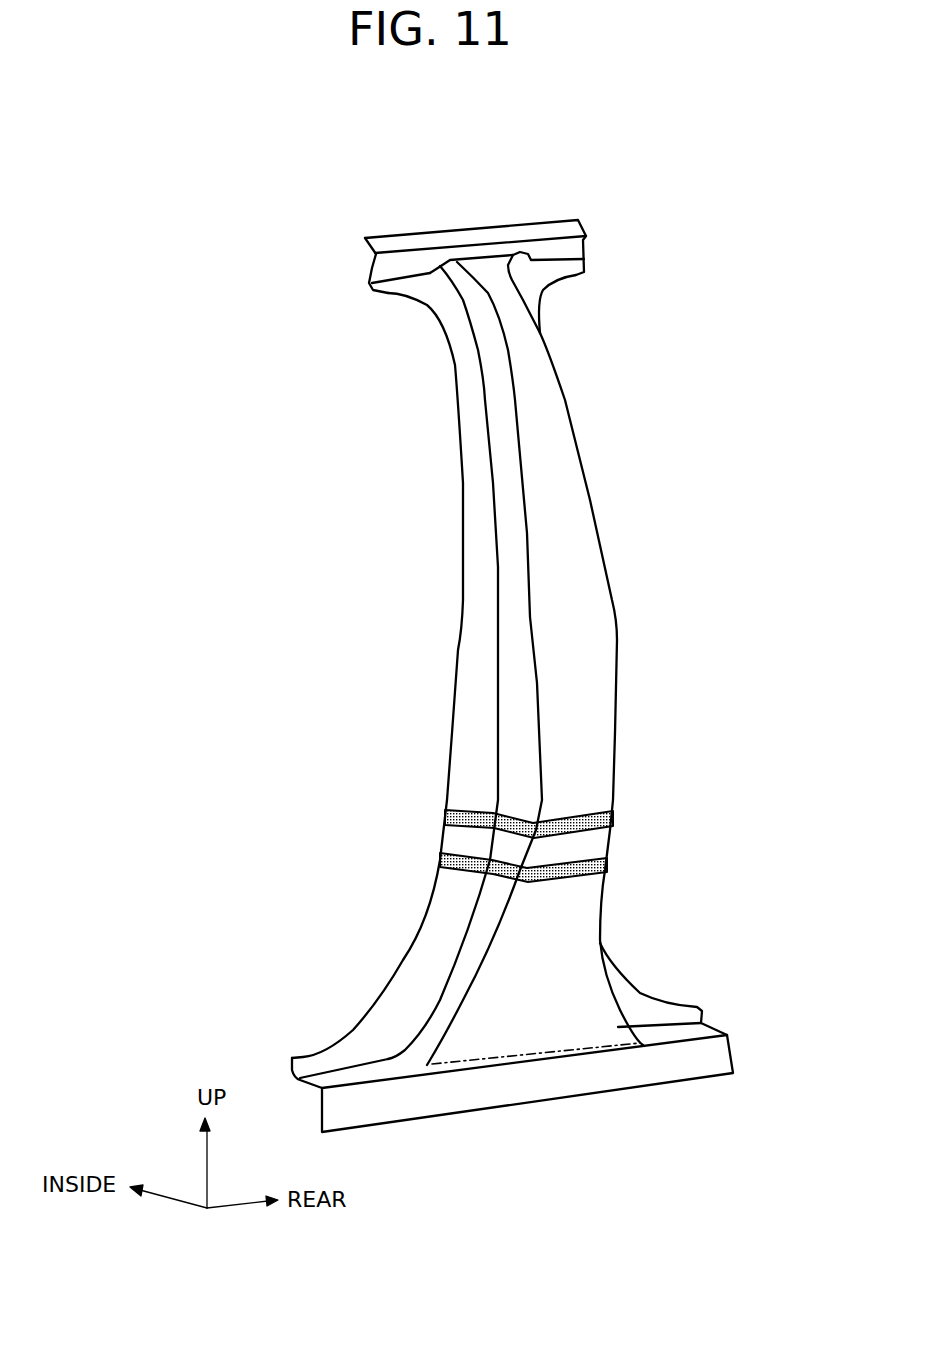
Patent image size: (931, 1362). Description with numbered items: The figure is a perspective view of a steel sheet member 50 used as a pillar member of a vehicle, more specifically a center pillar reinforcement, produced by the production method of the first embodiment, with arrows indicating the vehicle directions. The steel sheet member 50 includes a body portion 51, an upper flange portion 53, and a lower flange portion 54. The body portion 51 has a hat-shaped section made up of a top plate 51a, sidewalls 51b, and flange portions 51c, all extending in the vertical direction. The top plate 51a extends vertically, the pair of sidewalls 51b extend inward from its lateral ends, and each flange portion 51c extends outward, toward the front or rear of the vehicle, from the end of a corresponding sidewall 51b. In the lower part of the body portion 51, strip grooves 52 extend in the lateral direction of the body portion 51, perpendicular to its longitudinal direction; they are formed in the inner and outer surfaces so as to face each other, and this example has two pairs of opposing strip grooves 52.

The steel sheet member 50 is at (612, 321).
The body portion 51 is at (332, 522).
The top plate 51a is at (547, 527).
The sidewalls 51b is at (512, 574).
The flange portions 51c is at (472, 607).
The strip grooves 52 is at (613, 819).
The upper flange portion 53 is at (365, 262).
The lower flange portion 54 is at (737, 1052).